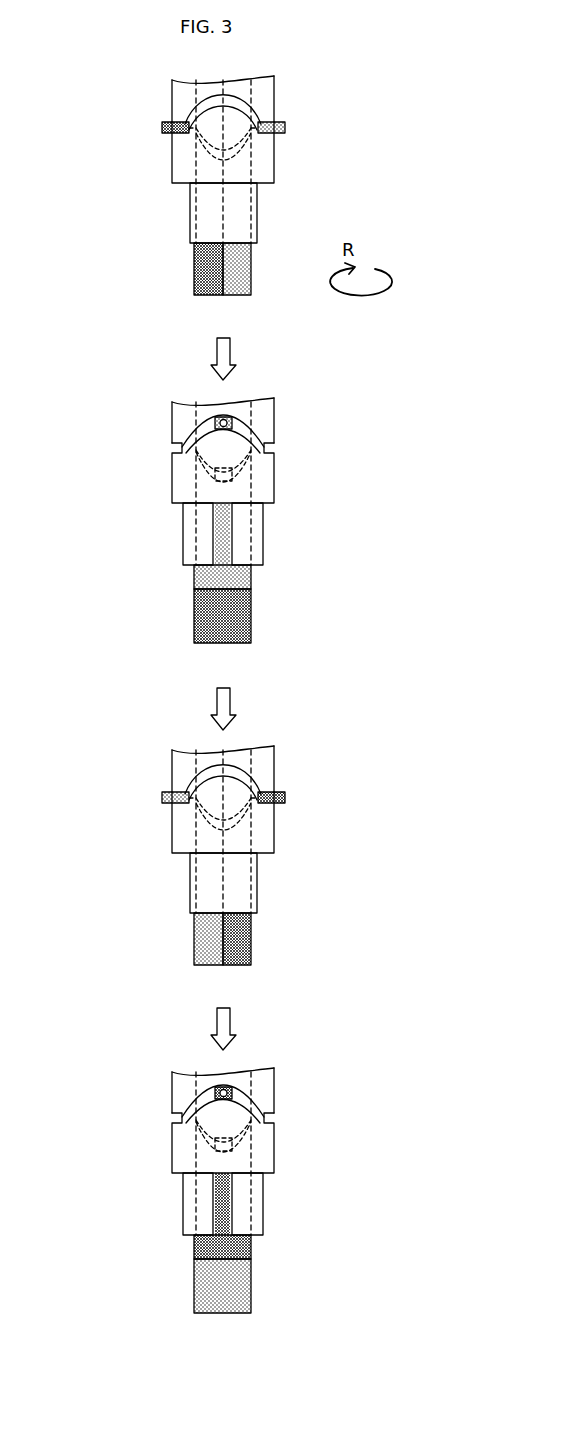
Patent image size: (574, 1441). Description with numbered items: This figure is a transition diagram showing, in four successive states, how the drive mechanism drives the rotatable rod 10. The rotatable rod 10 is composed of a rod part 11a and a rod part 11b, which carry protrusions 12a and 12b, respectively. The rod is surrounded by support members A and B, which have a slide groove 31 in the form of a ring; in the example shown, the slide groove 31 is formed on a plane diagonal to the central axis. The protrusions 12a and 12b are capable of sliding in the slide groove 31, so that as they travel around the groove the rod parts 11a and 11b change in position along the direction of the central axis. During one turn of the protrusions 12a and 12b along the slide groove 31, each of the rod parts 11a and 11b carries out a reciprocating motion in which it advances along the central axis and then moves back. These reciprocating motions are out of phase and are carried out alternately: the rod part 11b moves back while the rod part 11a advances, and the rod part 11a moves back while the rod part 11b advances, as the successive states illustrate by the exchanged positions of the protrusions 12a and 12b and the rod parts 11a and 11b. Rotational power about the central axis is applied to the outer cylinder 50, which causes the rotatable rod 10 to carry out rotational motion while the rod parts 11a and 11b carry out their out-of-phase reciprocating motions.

The rotatable rod 10 is at (246, 302).
The rod part 11a is at (197, 272).
The rod part 11b is at (250, 272).
The protrusion 12a is at (162, 128).
The protrusion 12b is at (285, 128).
The slide groove 31 is at (243, 104).
The outer cylinder 50 is at (258, 206).
The support member A is at (172, 158).
The support member B is at (172, 97).